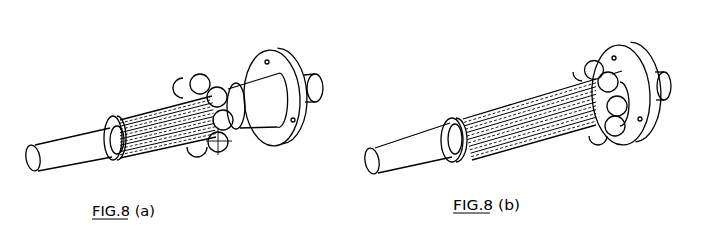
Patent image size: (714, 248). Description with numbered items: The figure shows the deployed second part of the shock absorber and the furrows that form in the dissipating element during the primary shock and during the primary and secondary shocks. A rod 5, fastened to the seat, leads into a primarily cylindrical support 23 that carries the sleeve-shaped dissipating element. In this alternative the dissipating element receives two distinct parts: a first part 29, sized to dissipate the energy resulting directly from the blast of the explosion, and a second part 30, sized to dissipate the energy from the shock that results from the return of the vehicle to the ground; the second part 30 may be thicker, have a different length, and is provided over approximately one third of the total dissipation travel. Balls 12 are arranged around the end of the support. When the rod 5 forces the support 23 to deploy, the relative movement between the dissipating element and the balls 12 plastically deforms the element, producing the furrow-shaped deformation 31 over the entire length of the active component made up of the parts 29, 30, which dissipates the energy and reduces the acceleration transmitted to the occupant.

The rod 5 is at (65, 150).
The support 23 is at (119, 158).
The first part 29 is at (162, 106).
The furrow-shaped deformation 31 is at (155, 135).
The second part 30 is at (248, 89).
The balls 12 is at (223, 115).